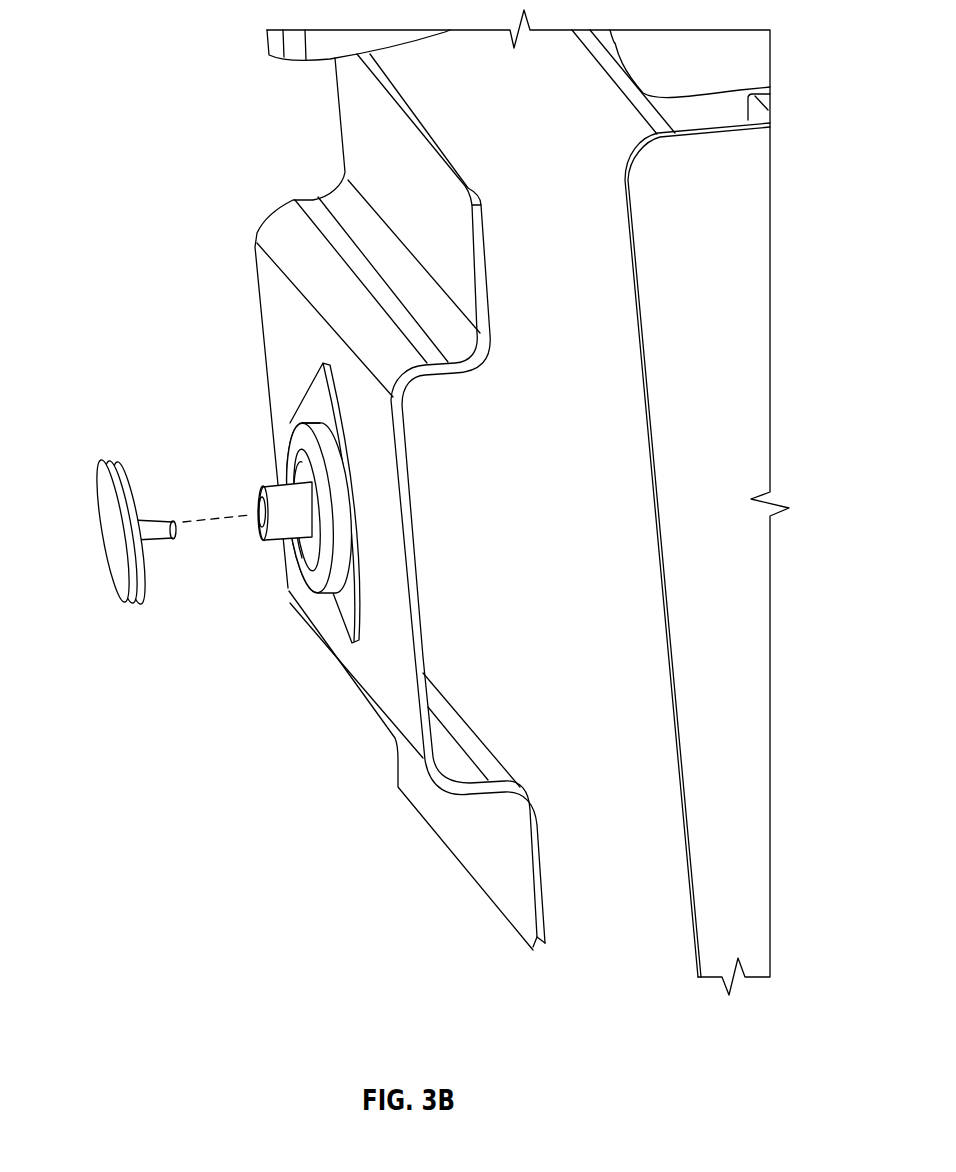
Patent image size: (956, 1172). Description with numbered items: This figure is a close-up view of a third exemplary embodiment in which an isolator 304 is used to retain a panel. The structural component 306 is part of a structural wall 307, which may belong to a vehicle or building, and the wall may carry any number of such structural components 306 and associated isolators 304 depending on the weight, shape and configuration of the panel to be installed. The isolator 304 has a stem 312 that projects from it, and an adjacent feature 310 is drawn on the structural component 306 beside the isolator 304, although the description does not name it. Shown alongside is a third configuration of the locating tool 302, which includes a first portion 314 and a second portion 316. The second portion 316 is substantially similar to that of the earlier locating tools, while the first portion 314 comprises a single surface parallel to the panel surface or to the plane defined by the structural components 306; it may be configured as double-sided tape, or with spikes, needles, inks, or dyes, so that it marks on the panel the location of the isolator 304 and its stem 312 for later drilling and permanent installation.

The locating tool 302 is at (119, 571).
The isolator 304 is at (360, 480).
The structural component 306 is at (276, 225).
The structural wall 307 is at (722, 268).
The gusset 310 is at (318, 402).
The stem 312 is at (273, 488).
The first portion 314 is at (110, 535).
The second portion 316 is at (143, 520).